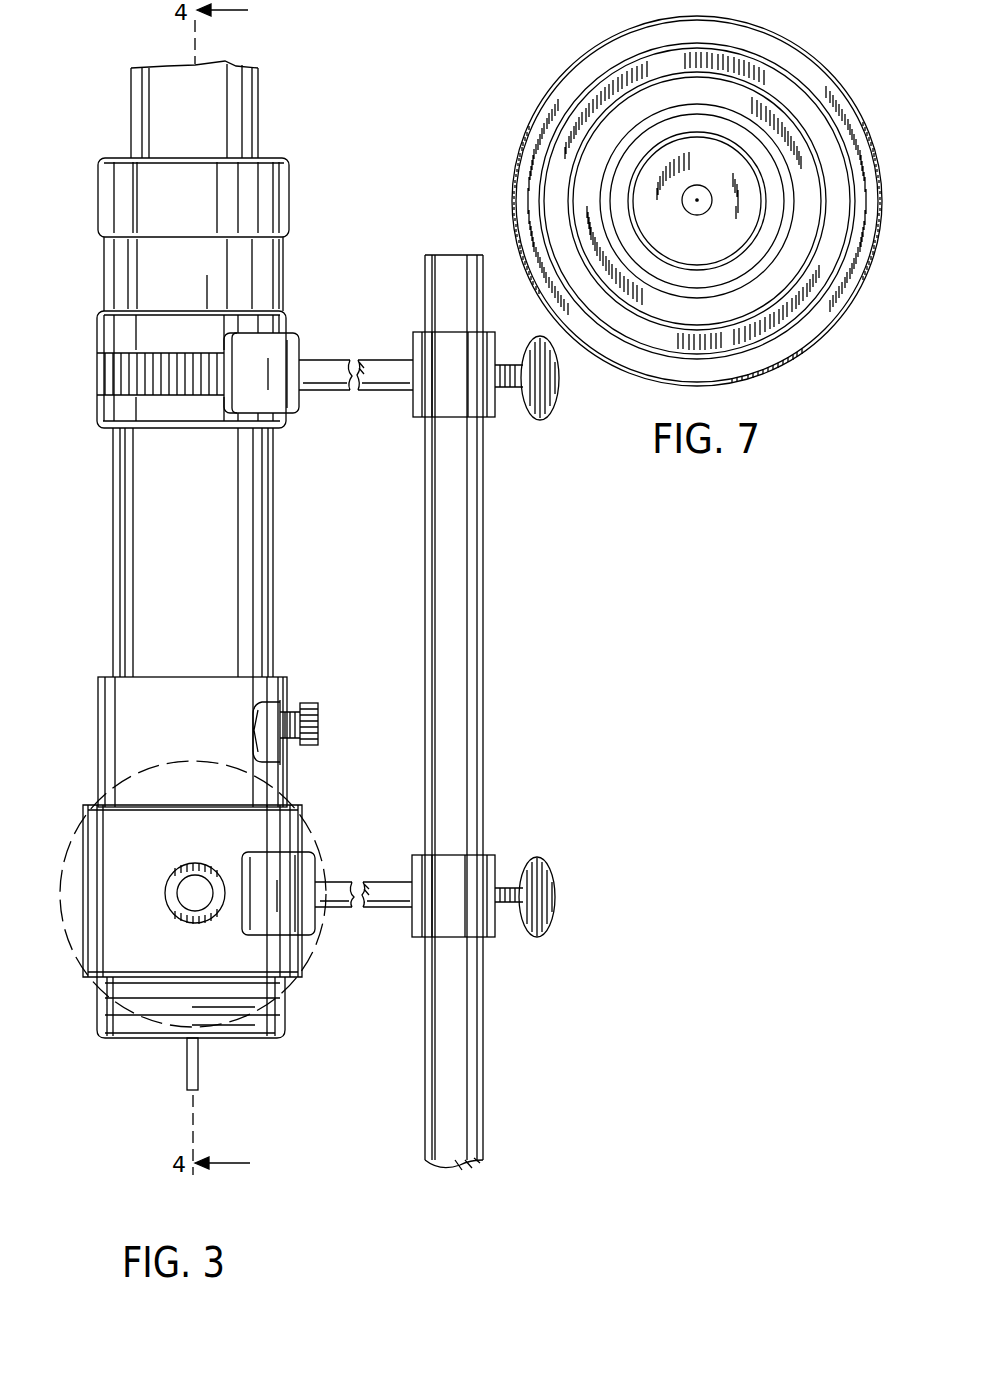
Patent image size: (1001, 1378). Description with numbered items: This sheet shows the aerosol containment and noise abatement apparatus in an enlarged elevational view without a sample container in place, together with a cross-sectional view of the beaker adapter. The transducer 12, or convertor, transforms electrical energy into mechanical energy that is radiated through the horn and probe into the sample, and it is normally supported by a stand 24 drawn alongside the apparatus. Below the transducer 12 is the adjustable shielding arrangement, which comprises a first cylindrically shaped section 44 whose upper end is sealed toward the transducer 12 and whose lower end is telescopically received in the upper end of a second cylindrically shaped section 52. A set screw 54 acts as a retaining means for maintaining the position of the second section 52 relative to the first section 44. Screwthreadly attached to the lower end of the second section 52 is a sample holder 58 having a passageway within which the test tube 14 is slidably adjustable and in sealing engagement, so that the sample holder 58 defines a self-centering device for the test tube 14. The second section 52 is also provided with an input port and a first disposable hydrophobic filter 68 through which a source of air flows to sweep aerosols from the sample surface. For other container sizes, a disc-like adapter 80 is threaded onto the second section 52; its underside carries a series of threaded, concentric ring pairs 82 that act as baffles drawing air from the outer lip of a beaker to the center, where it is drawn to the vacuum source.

In FIG. 3, the transducer 12 is at (276, 321).
In FIG. 3, the test tube 14 is at (192, 1068).
In FIG. 3, the stand 24 is at (460, 565).
In FIG. 3, the first cylindrically shaped section 44 is at (247, 555).
In FIG. 3, the second cylindrically shaped section 52 is at (260, 690).
In FIG. 3, the set screw 54 is at (320, 703).
In FIG. 3, the sample holder 58 is at (285, 1017).
In FIG. 3, the first disposable hydrophobic filter 68 is at (73, 832).
In FIG. 7, the disc-like adapter 80 is at (557, 77).
In FIG. 7, the threaded, concentric ring pairs 82 is at (790, 72).